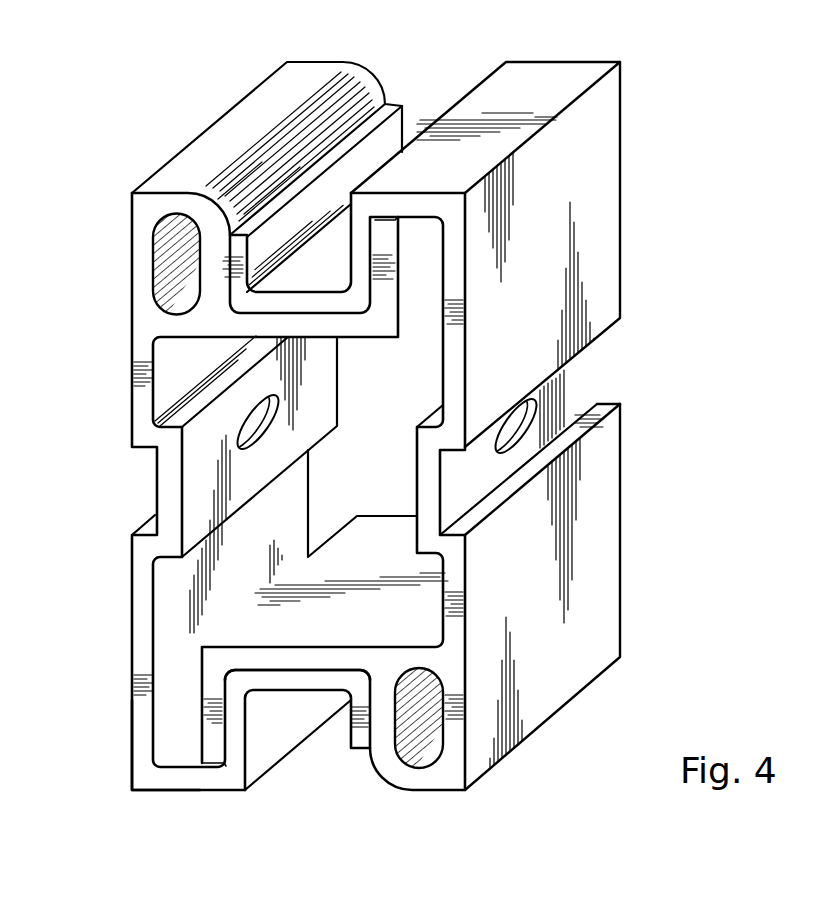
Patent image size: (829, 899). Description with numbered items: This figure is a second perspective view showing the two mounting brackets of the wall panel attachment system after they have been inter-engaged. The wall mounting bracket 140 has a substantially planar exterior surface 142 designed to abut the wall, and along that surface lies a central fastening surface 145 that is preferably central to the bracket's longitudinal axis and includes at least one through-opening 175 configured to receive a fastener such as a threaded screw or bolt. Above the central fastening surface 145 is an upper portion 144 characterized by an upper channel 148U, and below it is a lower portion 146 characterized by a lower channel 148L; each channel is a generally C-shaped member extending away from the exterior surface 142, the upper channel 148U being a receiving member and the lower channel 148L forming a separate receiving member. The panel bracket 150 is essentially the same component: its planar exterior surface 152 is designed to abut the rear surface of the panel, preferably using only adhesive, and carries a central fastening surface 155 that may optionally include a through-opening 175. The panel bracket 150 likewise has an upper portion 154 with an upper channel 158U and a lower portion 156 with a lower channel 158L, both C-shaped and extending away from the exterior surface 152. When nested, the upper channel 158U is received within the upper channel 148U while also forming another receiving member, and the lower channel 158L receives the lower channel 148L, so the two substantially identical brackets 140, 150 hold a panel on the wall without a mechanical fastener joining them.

The wall mounting bracket 140 is at (100, 227).
The exterior surface 142 is at (143, 717).
The upper portion 144 is at (402, 60).
The upper portion 154 is at (290, 242).
The central fastening surface 145 is at (322, 390).
The lower portion 146 is at (287, 778).
The lower portion 156 is at (307, 740).
The upper channel 148U is at (207, 338).
The lower channel 148L is at (308, 692).
The panel bracket 150 is at (648, 91).
The exterior surface 152 is at (602, 213).
The central fastening surface 155 is at (583, 380).
The upper channel 158U is at (302, 270).
The lower channel 158L is at (273, 635).
The through-opening 175 is at (243, 437).